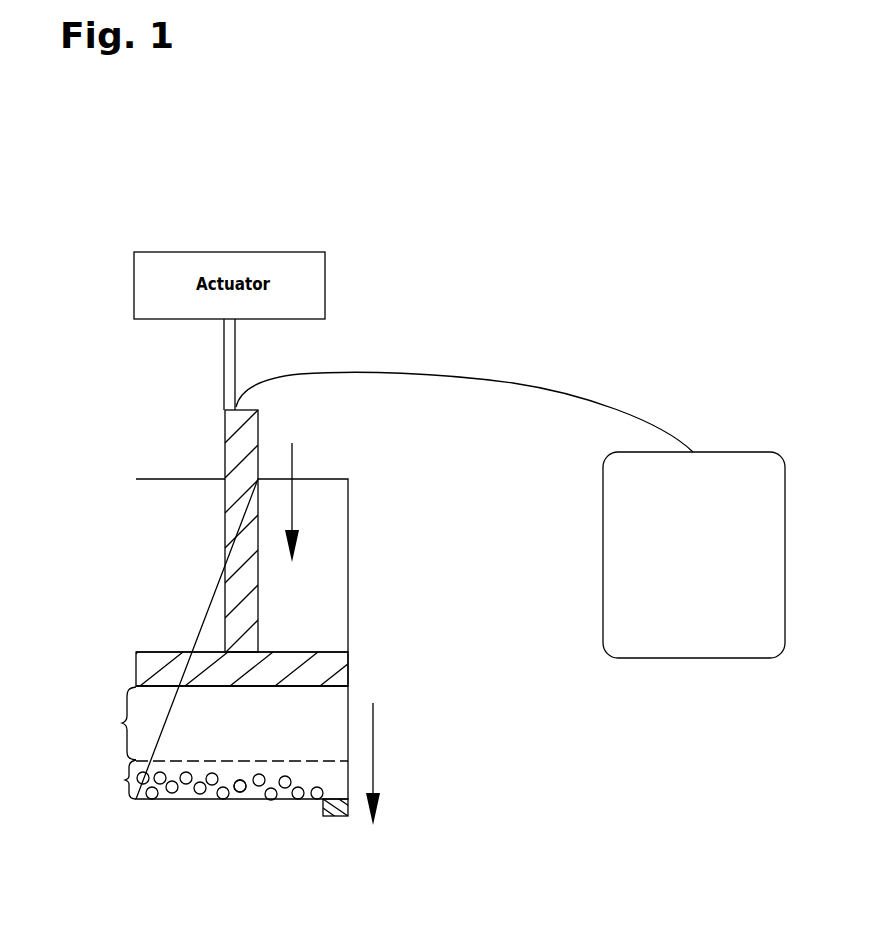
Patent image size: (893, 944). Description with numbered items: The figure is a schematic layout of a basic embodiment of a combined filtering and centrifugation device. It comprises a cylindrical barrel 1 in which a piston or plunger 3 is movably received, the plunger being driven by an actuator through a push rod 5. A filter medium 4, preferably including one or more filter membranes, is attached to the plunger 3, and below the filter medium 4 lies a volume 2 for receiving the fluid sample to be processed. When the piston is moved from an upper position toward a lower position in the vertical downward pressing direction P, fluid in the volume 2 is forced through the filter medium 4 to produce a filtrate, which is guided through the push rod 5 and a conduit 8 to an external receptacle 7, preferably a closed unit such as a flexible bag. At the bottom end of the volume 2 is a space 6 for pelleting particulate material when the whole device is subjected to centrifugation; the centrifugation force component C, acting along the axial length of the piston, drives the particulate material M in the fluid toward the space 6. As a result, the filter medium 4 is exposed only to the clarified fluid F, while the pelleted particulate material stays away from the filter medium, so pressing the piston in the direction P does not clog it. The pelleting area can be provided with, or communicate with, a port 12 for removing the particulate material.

The cylindrical barrel 1 is at (348, 565).
The volume 2 is at (287, 709).
The piston or plunger 3 is at (153, 666).
The filter medium 4 is at (125, 677).
The push rod 5 is at (204, 591).
The space for pelleting particulate material 6 is at (126, 780).
The external receptacle 7 is at (600, 582).
The conduit 8 is at (513, 382).
The port 12 is at (335, 816).
The particulate material M is at (253, 792).
The clarified fluid F is at (121, 723).
The pressing direction P is at (302, 502).
The centrifugation force component C is at (381, 764).